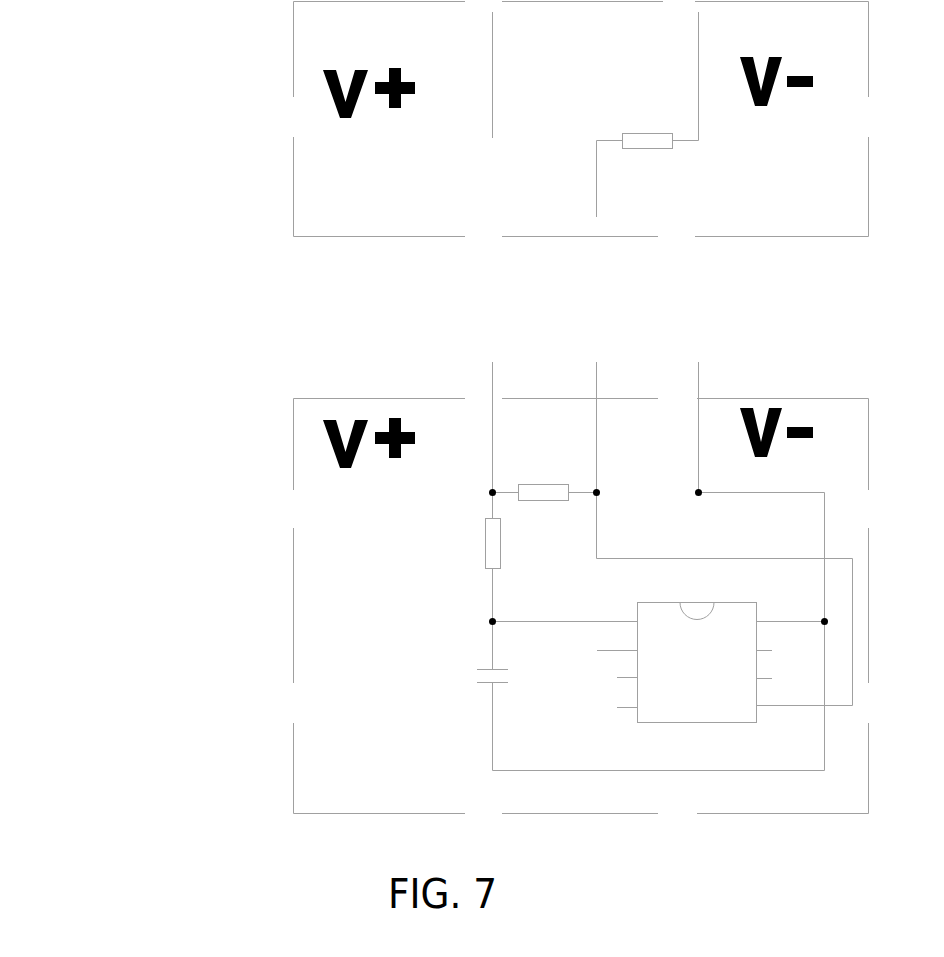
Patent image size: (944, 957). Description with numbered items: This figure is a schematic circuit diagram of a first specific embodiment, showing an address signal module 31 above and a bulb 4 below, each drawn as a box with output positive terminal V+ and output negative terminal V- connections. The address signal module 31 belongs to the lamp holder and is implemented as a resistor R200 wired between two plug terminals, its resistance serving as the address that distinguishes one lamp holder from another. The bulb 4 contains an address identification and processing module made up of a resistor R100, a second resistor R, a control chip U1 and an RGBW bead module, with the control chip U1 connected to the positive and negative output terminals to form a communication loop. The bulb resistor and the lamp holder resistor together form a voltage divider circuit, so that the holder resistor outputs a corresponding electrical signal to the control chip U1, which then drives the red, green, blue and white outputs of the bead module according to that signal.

The address signal module 31 is at (470, 119).
The bulb 4 is at (462, 577).
The resistor R200 is at (648, 130).
The resistor R100 is at (545, 481).
The resistor R is at (483, 544).
The control chip U1 is at (697, 663).